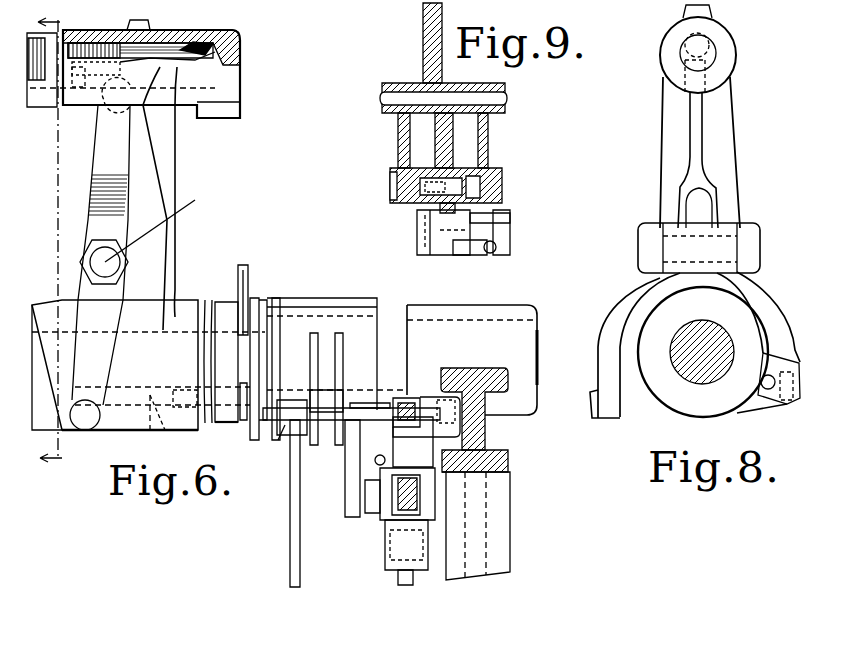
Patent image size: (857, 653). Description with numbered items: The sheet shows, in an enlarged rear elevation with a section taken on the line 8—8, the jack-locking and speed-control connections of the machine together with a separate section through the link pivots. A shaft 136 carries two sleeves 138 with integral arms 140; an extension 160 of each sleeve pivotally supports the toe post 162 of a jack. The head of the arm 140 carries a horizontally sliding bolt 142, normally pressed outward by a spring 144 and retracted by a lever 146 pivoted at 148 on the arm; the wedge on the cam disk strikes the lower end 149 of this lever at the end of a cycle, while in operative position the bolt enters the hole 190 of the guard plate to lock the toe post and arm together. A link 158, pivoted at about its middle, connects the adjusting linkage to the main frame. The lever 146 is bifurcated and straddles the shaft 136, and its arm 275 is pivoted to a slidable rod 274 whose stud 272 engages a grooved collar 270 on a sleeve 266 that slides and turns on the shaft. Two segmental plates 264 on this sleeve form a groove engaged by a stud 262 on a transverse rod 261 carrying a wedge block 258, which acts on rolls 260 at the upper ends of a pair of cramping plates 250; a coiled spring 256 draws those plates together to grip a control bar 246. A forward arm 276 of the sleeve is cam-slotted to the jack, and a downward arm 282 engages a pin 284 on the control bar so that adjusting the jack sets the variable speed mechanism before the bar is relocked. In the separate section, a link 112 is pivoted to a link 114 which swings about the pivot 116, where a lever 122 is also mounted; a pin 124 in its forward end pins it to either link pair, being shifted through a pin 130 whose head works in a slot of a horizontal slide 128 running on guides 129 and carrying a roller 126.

In FIG. 6, the section line 8— 8 is at (64, 244).
In FIG. 9, the link 112 is at (502, 178).
In FIG. 9, the link 114 is at (488, 145).
In FIG. 9, the pivot 116 is at (390, 102).
In FIG. 9, the lever 122 is at (425, 42).
In FIG. 9, the pin 124 is at (425, 185).
In FIG. 9, the roller 126 is at (492, 253).
In FIG. 9, the horizontal slide 128 is at (468, 252).
In FIG. 6, the guides 129 is at (472, 351).
In FIG. 9, the guides 129 is at (478, 222).
In FIG. 9, the pin 130 is at (455, 210).
In FIG. 6, the shaft 136 is at (540, 345).
In FIG. 8, the shaft 136 is at (647, 412).
In FIG. 6, the sleeves 138 is at (175, 320).
In FIG. 6, the arms 140 is at (185, 100).
In FIG. 8, the arms 140 is at (715, 116).
In FIG. 6, the bolt 142 is at (208, 40).
In FIG. 8, the bolt 142 is at (690, 58).
In FIG. 6, the spring 144 is at (118, 31).
In FIG. 6, the lever 146 is at (110, 138).
In FIG. 8, the lever 146 is at (680, 190).
In FIG. 6, the pivot 148 is at (166, 225).
In FIG. 8, the pivot 148 is at (642, 250).
In FIG. 6, the lower end of lever 149 is at (92, 428).
In FIG. 8, the lower end of lever 149 is at (597, 408).
In FIG. 8, the link 158 is at (688, 362).
In FIG. 6, the extension 160 is at (208, 300).
In FIG. 6, the toe post 162 is at (232, 112).
In FIG. 6, the hole 190 is at (215, 63).
In FIG. 6, the control bar 246 is at (400, 505).
In FIG. 6, the cramping plates 250 is at (295, 510).
In FIG. 6, the coiled spring 256 is at (390, 467).
In FIG. 6, the wedge block 258 is at (407, 440).
In FIG. 6, the roll 260 is at (405, 410).
In FIG. 6, the transverse rod 261 is at (270, 462).
In FIG. 6, the stud or roll 262 is at (318, 335).
In FIG. 6, the segmental plates 264 is at (343, 340).
In FIG. 6, the sleeve 266 is at (360, 357).
In FIG. 6, the grooved collar 270 is at (258, 320).
In FIG. 6, the stud or roll 272 is at (280, 345).
In FIG. 6, the slidable rod 274 is at (165, 435).
In FIG. 8, the slidable rod 274 is at (750, 398).
In FIG. 8, the arm of lever 275 is at (772, 392).
In FIG. 6, the arm 276 is at (246, 268).
In FIG. 6, the downwardly projecting arm 282 is at (350, 520).
In FIG. 6, the pin 284 is at (372, 512).